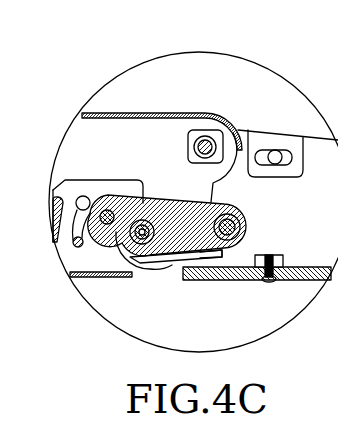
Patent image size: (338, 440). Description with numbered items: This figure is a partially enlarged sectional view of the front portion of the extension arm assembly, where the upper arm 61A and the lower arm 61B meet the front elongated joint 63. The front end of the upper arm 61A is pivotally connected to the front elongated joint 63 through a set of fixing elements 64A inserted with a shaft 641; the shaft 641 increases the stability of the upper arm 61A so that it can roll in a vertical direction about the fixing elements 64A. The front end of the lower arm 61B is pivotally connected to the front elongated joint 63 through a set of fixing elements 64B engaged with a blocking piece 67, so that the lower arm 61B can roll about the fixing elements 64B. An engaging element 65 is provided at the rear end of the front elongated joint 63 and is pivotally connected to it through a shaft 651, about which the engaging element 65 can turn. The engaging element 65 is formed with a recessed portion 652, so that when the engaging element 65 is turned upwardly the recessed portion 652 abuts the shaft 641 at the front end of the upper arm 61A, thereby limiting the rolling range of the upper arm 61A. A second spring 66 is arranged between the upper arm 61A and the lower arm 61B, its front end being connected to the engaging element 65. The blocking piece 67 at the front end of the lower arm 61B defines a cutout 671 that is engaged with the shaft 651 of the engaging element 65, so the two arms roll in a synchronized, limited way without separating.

The upper arm 61A is at (137, 112).
The lower arm 61B is at (90, 277).
The front elongated joint 63 is at (250, 280).
The fixing elements 64A is at (204, 130).
The fixing elements 64B is at (141, 245).
The shaft 641 is at (188, 144).
The engaging element 65 is at (112, 197).
The shaft 651 is at (250, 227).
The recessed portion 652 is at (146, 228).
The second spring 66 is at (65, 250).
The blocking piece 67 is at (173, 257).
The cutout 671 is at (215, 252).